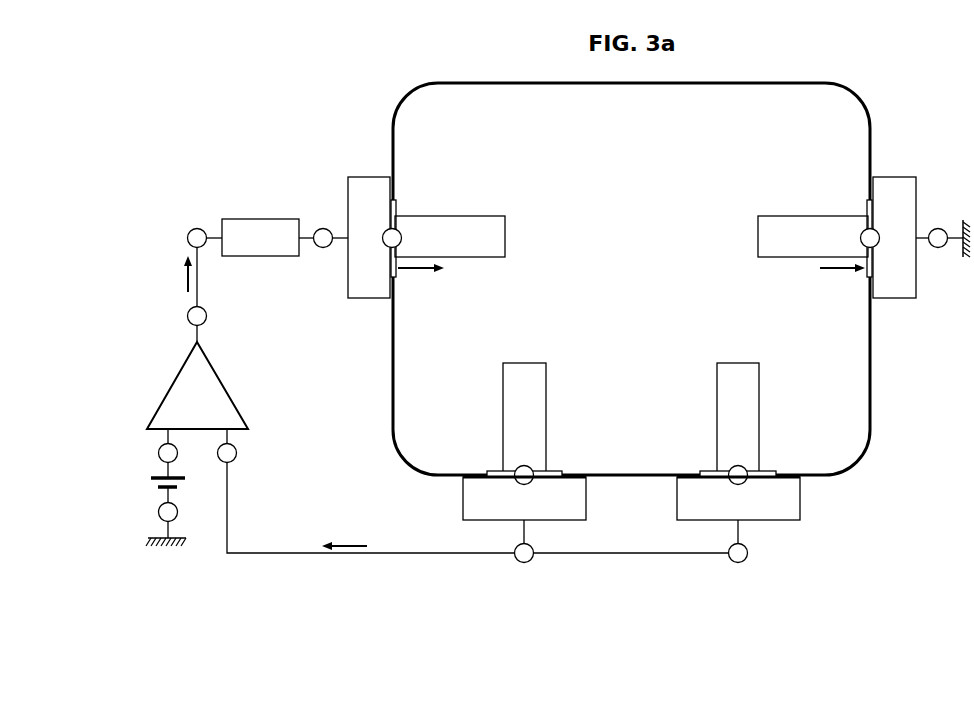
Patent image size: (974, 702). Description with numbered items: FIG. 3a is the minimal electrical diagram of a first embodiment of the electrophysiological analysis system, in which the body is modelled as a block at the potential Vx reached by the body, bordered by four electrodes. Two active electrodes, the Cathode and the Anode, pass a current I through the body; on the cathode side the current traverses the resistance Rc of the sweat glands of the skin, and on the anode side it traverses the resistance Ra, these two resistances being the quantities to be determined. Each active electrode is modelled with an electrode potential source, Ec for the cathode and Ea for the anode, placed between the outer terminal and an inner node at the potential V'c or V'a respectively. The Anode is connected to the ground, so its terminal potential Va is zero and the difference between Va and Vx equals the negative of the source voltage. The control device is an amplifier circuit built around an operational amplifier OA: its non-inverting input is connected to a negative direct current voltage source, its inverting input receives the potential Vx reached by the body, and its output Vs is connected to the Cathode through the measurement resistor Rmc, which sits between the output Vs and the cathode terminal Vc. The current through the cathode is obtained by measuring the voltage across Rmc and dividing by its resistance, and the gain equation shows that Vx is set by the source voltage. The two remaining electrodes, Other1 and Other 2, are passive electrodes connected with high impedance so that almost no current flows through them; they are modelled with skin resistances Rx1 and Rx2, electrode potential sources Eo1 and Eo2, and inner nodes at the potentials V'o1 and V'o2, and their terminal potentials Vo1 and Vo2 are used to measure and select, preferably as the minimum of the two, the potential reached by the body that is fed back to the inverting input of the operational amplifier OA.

The potential reached by the body Vx is at (631, 279).
The cathode Cathode is at (352, 216).
The anode Anode is at (902, 216).
The cathode electrode potential source Ec is at (369, 237).
The anode electrode potential source Ea is at (901, 237).
The resistance of the sweat glands on the cathode side Rc is at (450, 226).
The resistance of the sweat glands on the anode side Ra is at (813, 226).
The cathode inner node potential V'c is at (407, 238).
The anode inner node potential V'a is at (856, 238).
The cathode potential Vc is at (330, 226).
The anode potential Va is at (949, 231).
The measurement resistor Rmc is at (260, 225).
The output of the operational amplifier Vs is at (210, 324).
The operational amplifier OA is at (197, 385).
The cell current I is at (519, 274).
The first other electrode resistance Rx1 is at (757, 419).
The second other electrode resistance Rx2 is at (506, 419).
The first other electrode potential source Eo1 is at (738, 510).
The second other electrode potential source Eo2 is at (524, 510).
The first other electrode inner node potential V'o1 is at (738, 465).
The second other electrode inner node potential V'o2 is at (524, 465).
The potential of the first high-impedance electrode Vo1 is at (738, 569).
The potential of the second high-impedance electrode Vo2 is at (524, 569).
The passive electrode Other1 is at (783, 490).
The passive electrode Other 2 is at (477, 490).